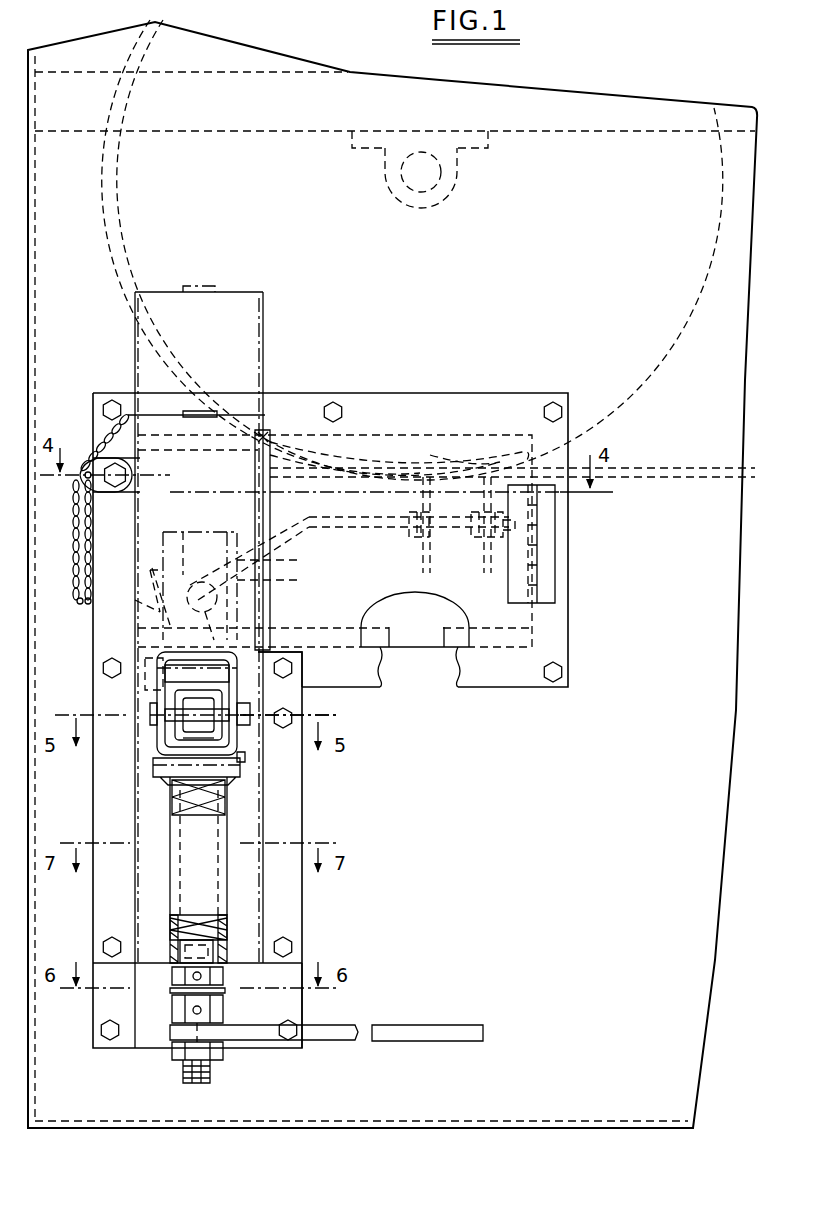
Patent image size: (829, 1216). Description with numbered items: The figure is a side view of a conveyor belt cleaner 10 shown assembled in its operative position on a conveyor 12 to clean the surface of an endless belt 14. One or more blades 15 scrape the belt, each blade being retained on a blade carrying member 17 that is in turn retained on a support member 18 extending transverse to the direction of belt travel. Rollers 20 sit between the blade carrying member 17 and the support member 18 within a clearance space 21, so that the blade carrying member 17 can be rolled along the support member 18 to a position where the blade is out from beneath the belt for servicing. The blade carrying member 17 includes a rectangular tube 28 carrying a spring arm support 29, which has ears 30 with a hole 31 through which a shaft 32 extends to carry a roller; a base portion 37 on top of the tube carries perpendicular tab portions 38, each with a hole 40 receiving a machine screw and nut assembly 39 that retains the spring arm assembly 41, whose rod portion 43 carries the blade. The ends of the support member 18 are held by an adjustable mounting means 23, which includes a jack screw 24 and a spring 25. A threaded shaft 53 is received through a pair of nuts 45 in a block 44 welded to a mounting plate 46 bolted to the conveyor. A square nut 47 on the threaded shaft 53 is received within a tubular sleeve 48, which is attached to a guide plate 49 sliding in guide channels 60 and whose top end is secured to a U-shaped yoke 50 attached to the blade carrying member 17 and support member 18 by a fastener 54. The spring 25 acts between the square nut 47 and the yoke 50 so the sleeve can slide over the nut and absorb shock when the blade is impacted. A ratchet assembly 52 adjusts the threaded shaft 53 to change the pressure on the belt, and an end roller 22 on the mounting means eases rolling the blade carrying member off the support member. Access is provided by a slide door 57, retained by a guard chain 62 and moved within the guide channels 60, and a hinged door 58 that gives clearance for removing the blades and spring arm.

The conveyor belt cleaner 10 is at (462, 776).
The conveyor 12 is at (106, 50).
The endless belt 14 is at (668, 478).
The blade 15 is at (490, 556).
The blade carrying member 17 is at (148, 732).
The support member 18 is at (166, 742).
The rollers 20 is at (166, 668).
The clearance space 21 is at (200, 664).
The end roller 22 is at (236, 776).
The adjustable mounting means 23 is at (220, 834).
The jack screw 24 is at (214, 1060).
The spring 25 is at (216, 934).
The rectangular tube 28 is at (300, 703).
The spring arm support 29 is at (280, 604).
The ears 30 is at (310, 663).
The hole 31 is at (93, 673).
The shaft 32 is at (330, 716).
The base portion 37 is at (135, 600).
The tab portions 38 is at (193, 573).
The machine screw and nut assembly 39 is at (283, 623).
The hole 40 is at (275, 585).
The spring arm assembly 41 is at (305, 515).
The rod portion 43 is at (245, 548).
The block 44 is at (166, 995).
The nuts 45 is at (226, 977).
The mounting plate 46 is at (304, 1009).
The square nut 47 is at (180, 956).
The tubular sleeve 48 is at (174, 806).
The guide plate 49 is at (245, 890).
The U-shaped yoke 50 is at (246, 758).
The ratchet assembly 52 is at (348, 1040).
The threaded shaft 53 is at (176, 892).
The fastener 54 is at (176, 713).
The slide door 57 is at (190, 410).
The hinged door 58 is at (505, 618).
The guide channels 60 is at (266, 438).
The guard chain 62 is at (77, 603).